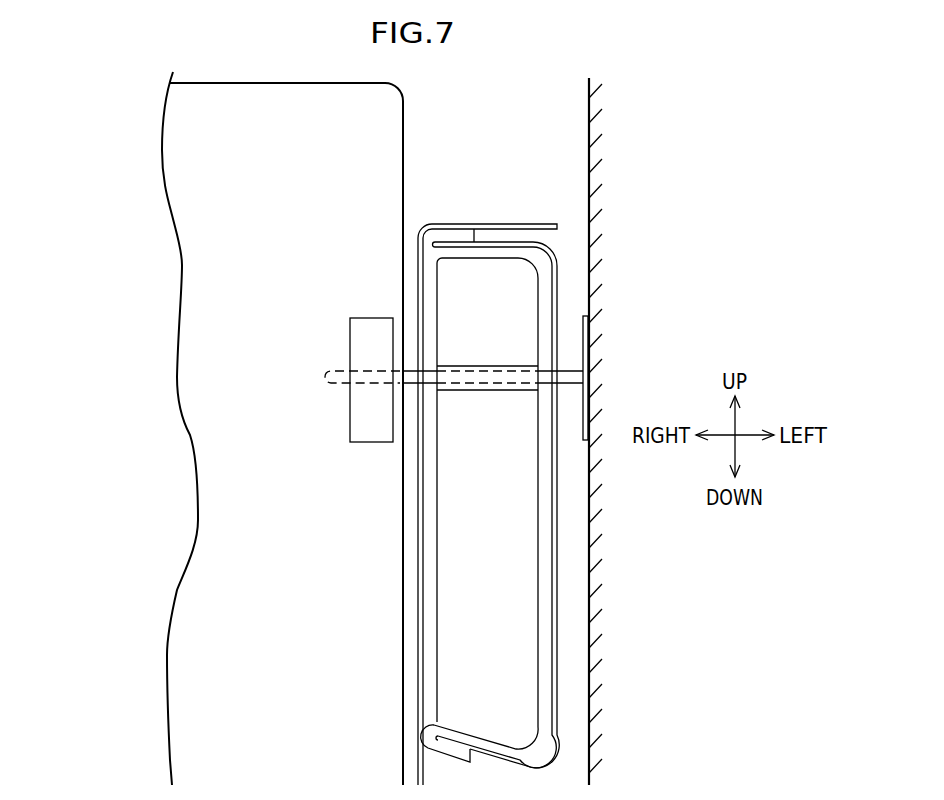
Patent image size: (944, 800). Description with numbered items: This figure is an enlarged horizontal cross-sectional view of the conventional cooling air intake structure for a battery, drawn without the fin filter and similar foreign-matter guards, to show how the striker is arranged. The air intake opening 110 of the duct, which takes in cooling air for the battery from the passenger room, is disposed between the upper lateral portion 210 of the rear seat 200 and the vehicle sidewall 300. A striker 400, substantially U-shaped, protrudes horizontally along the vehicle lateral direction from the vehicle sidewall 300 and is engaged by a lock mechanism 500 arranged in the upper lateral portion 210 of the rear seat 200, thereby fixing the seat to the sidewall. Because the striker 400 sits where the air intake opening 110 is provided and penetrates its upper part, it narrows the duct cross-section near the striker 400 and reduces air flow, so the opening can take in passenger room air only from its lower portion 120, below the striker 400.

The air intake opening 110 is at (512, 482).
The lower portion 120 is at (507, 538).
The rear seat 200 is at (407, 148).
The upper lateral portion 210 is at (363, 204).
The vehicle sidewall 300 is at (587, 113).
The striker 400 is at (508, 367).
The lock mechanism 500 is at (348, 352).